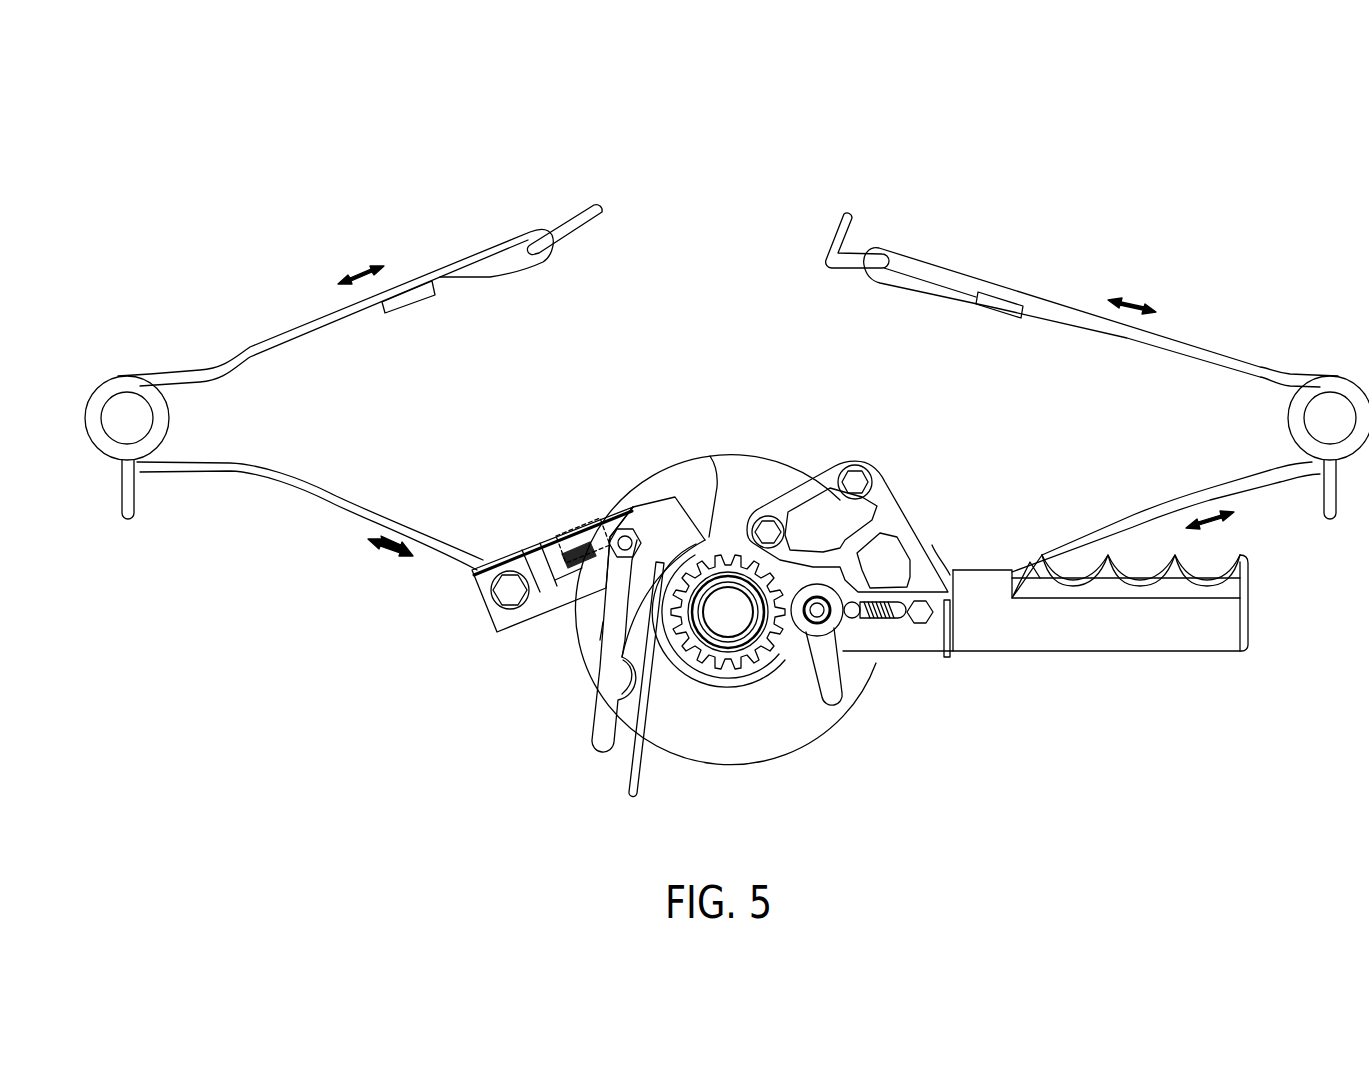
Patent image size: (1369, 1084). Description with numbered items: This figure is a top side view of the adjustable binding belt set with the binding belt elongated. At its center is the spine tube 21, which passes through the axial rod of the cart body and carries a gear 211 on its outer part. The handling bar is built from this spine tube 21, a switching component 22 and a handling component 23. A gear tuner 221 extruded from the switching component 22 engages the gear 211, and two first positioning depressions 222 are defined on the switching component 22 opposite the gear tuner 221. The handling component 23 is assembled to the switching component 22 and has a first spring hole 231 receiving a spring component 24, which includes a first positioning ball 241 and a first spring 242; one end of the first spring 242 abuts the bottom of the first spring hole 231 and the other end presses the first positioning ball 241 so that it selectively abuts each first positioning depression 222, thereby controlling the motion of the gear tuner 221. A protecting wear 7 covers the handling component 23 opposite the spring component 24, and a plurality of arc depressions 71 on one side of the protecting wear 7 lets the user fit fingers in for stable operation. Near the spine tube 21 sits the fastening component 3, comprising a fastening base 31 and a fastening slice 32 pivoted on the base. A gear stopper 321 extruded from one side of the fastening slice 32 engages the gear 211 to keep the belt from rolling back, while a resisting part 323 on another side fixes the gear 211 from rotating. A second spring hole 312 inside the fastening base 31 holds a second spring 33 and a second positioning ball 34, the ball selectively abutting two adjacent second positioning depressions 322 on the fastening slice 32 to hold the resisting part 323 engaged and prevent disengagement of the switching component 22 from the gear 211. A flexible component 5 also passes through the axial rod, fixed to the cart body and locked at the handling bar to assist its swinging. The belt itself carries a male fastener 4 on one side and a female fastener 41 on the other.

The fastening component 3 is at (443, 663).
The fastening base 31 is at (487, 600).
The second spring hole 312 is at (533, 553).
The fastening slice 32 is at (598, 660).
The gear stopper 321 is at (633, 688).
The second positioning depressions 322 is at (567, 623).
The resisting part 323 is at (708, 456).
The second spring 33 is at (570, 547).
The second positioning ball 34 is at (597, 550).
The male fastener 4 is at (852, 216).
The female fastener 41 is at (577, 222).
The flexible component 5 is at (632, 781).
The protecting wear 7 is at (1230, 633).
The arc depressions 71 is at (1210, 557).
The spine tube 21 is at (773, 650).
The gear 211 is at (713, 664).
The switching component 22 is at (833, 706).
The gear tuner 221 is at (790, 640).
The first positioning depressions 222 is at (862, 555).
The handling component 23 is at (932, 633).
The first spring hole 231 is at (932, 545).
The spring component 24 is at (963, 773).
The first positioning ball 241 is at (858, 622).
The first spring 242 is at (900, 626).